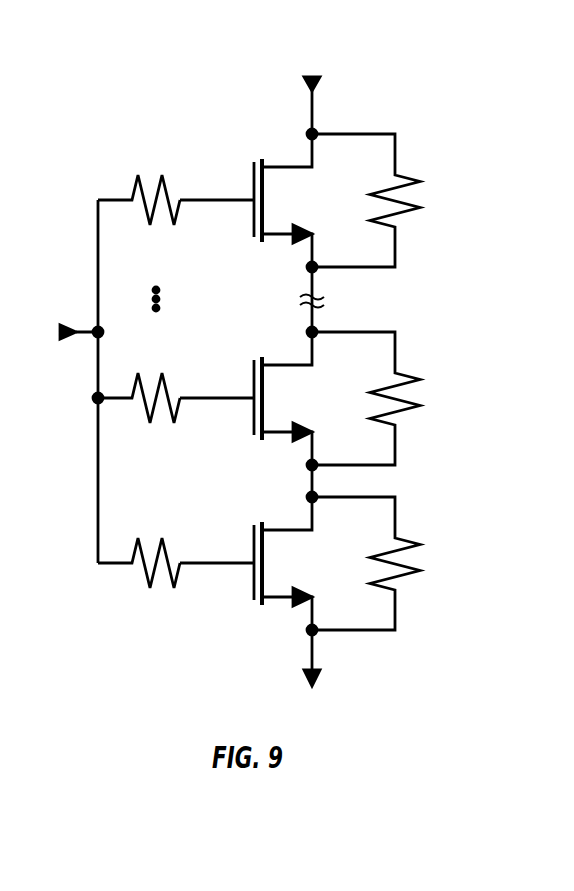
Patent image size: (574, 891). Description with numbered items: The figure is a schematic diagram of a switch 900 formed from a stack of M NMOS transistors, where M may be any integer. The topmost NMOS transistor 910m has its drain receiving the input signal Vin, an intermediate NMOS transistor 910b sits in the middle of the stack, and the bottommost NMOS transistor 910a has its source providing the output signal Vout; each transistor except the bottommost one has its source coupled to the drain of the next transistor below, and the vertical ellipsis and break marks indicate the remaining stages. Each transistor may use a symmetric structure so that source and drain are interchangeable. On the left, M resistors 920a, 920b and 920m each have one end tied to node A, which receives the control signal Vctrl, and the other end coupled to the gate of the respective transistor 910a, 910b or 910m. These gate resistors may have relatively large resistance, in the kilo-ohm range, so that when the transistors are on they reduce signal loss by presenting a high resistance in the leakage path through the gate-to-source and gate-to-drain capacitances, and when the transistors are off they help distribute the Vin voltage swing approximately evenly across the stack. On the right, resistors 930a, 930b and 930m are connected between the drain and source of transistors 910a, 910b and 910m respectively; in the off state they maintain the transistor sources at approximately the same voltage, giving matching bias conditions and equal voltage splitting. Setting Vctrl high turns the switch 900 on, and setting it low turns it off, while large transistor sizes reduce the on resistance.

The switch 900 is at (137, 61).
The topmost NMOS transistor 910m is at (254, 182).
The NMOS transistor 910b is at (254, 380).
The bottommost NMOS transistor 910a is at (254, 545).
The resistor 920m is at (176, 208).
The resistor 920b is at (176, 406).
The resistor 920a is at (176, 571).
The resistor 930m is at (390, 192).
The resistor 930b is at (390, 390).
The resistor 930a is at (390, 555).